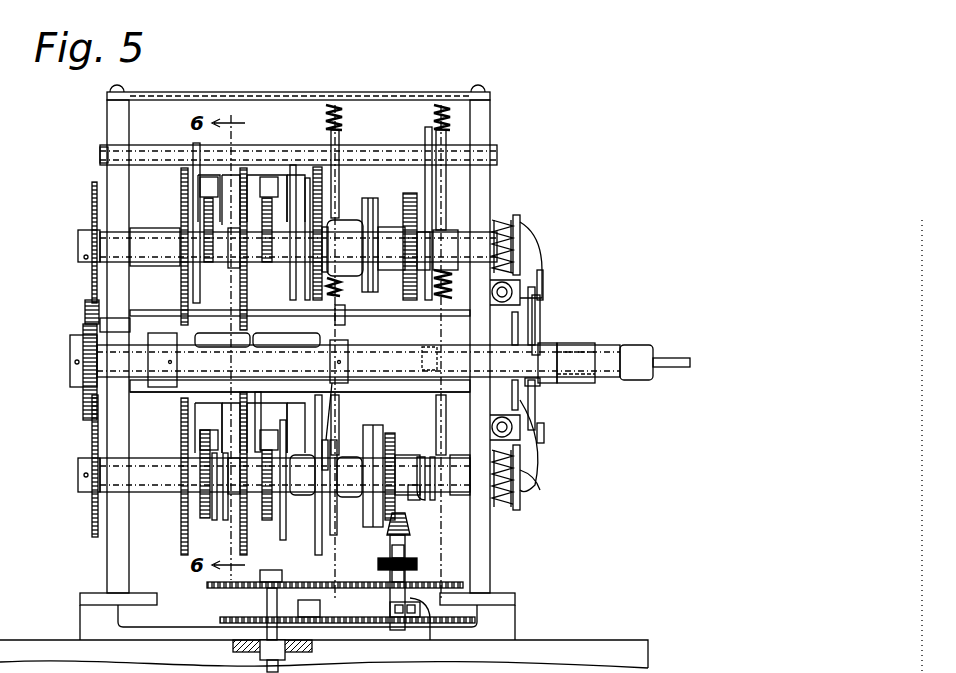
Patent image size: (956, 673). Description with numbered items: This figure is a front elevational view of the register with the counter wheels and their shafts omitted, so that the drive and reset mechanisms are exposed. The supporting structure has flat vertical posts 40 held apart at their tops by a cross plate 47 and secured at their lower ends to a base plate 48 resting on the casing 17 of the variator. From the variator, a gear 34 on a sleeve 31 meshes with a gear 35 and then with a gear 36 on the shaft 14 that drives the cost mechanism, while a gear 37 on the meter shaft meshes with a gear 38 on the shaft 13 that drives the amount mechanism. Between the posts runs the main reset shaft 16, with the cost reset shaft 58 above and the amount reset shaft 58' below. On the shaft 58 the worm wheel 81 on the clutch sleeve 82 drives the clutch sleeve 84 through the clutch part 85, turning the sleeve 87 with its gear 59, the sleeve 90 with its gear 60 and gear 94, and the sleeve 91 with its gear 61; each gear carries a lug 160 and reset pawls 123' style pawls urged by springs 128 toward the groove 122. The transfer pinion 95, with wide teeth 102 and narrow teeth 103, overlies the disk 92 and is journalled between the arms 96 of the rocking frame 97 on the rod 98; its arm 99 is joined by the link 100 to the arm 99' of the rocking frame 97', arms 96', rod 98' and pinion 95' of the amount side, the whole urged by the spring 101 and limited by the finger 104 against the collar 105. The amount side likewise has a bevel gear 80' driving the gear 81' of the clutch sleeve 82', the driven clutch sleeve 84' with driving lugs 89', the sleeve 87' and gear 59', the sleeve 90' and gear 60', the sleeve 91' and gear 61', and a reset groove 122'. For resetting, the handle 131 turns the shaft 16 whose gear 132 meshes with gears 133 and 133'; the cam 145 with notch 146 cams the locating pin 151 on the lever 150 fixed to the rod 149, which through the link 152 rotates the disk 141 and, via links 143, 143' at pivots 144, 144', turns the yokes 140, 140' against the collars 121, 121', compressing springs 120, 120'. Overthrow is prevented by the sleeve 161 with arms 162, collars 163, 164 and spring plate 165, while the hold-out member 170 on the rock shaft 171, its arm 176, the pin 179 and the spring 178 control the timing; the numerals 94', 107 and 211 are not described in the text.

The cross plate 47 is at (297, 92).
The spring 101 is at (450, 108).
The rocking frame 97 is at (320, 352).
The spring 178 is at (340, 120).
The rod 98 is at (298, 141).
The arm 99 is at (424, 352).
The wide teeth 102 is at (217, 147).
The arms 96 is at (254, 228).
The transfer pinion 95 is at (273, 174).
The narrow teeth 103 is at (200, 192).
The gear 133 is at (69, 242).
The gear 61 is at (169, 246).
The longitudinal groove 122 is at (110, 244).
The reset shaft 58 is at (269, 250).
The gear 59 is at (298, 232).
The sleeve 90 is at (286, 230).
The clutch sleeve 84 is at (345, 233).
The clutch part 85 is at (370, 210).
The worm wheel 81 is at (410, 239).
The clutch sleeve 82 is at (391, 233).
The spring 120 is at (514, 222).
The collar 121 is at (536, 233).
The yoke 140 is at (534, 263).
The pivot 144 is at (560, 276).
The link 143 is at (553, 310).
The notch 146 is at (540, 318).
The lever 150 is at (518, 330).
The disk 141 is at (542, 350).
The rod 149 is at (590, 341).
The operating handle 131 is at (640, 345).
The locating pin 151 is at (502, 303).
The sleeve 91 is at (177, 241).
The lug 160 is at (212, 272).
The gear 60 is at (228, 268).
The gear 94 is at (286, 239).
The disk 92 is at (306, 290).
The sleeve 87 is at (306, 259).
The hold-out member 170 is at (350, 308).
The spring plate 165 is at (340, 290).
The rock shaft 171 is at (300, 322).
The arm 176 is at (85, 315).
The pin 179 is at (83, 340).
The collar 163 is at (165, 348).
The arms 162 is at (222, 336).
The sleeve 161 is at (286, 338).
The collar 164 is at (345, 360).
The link 100 is at (422, 350).
The gear 132 is at (70, 380).
The main reset shaft 16 is at (165, 380).
The transfer pinion 95' is at (268, 404).
The rocking frame 97' is at (357, 405).
The rod 98' is at (300, 374).
The link 152 is at (540, 384).
The link 143' is at (565, 407).
The pivot 144' is at (570, 440).
The yoke 140' is at (545, 446).
The cam 145 is at (538, 478).
The collar 121' is at (542, 485).
The spring 120' is at (520, 499).
The arms 96' is at (285, 422).
The driving lugs 89' is at (322, 449).
The gear 81' is at (386, 464).
The arm 99' is at (457, 425).
The reset pawls 123' is at (293, 473).
The reset groove 122' is at (346, 447).
The clutch sleeve 82' is at (405, 474).
The finger 104 is at (425, 470).
The reset shaft 58' is at (255, 475).
The gear 133' is at (70, 466).
The springs 128 is at (298, 522).
The collar 107 is at (416, 500).
The collar 105 is at (433, 500).
The sleeve 91' is at (185, 466).
The sleeve 90' is at (222, 470).
The gear 94' is at (260, 473).
The gear 60' is at (249, 509).
The driven clutch sleeve 84' is at (346, 496).
The bevel gear 80' is at (421, 526).
The gear 59' is at (306, 476).
The sleeve 87' is at (337, 499).
The flange 211 is at (380, 560).
The shaft 13 is at (405, 548).
The gear 61' is at (168, 478).
The post 40 is at (107, 560).
The gear 38 is at (365, 582).
The gear 37 is at (245, 585).
The gear 34 is at (270, 617).
The base plate 48 is at (512, 625).
The casing 17 is at (598, 640).
The sleeve 31 is at (285, 655).
The gear 35 is at (340, 635).
The gear 36 is at (388, 625).
The shaft 14 is at (432, 642).